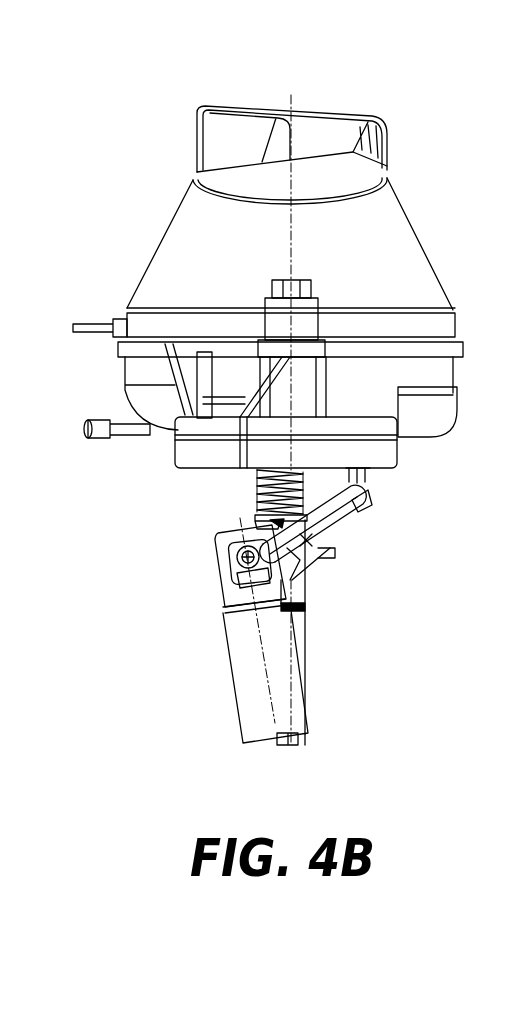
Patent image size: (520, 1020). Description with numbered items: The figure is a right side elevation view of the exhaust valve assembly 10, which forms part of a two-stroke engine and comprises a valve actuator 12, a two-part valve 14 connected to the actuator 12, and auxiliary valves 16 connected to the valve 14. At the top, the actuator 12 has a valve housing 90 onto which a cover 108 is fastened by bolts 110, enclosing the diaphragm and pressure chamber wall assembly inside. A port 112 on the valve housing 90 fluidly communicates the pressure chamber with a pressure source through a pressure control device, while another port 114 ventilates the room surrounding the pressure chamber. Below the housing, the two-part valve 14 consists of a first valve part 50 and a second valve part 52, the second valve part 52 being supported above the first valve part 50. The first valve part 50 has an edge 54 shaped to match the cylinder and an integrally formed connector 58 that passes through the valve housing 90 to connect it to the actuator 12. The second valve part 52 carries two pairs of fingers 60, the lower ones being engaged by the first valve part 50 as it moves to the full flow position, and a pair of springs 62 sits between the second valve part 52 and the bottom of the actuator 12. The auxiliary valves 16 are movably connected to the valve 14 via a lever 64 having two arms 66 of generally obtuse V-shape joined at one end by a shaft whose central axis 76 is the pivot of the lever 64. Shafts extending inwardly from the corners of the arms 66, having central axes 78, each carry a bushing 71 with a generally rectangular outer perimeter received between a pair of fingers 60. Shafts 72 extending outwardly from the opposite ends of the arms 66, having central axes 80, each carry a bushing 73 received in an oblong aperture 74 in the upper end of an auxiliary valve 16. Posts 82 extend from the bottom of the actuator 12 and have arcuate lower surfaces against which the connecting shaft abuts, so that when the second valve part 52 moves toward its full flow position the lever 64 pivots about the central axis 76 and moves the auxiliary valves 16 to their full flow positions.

The exhaust valve assembly 10 is at (75, 98).
The valve actuator 12 is at (392, 226).
The two-part valve 14 is at (384, 600).
The auxiliary valves 16 is at (245, 698).
The first valve part 50 is at (307, 632).
The second valve part 52 is at (307, 600).
The edge 54 is at (303, 738).
The connector 58 is at (327, 462).
The fingers 60 is at (318, 567).
The springs 62 is at (253, 477).
The lever 64 is at (250, 518).
The arms 66 is at (355, 522).
The bushing 71 is at (338, 551).
The shafts 72 is at (240, 570).
The bushing 73 is at (232, 600).
The oblong apertures 74 is at (228, 560).
The central axis 76 is at (364, 492).
The central axes 78 is at (335, 540).
The central axes 80 is at (237, 556).
The posts 82 is at (367, 476).
The valve housing 90 is at (218, 360).
The cover 108 is at (342, 162).
The bolts 110 is at (310, 280).
The port 112 is at (128, 428).
The port 114 is at (113, 322).